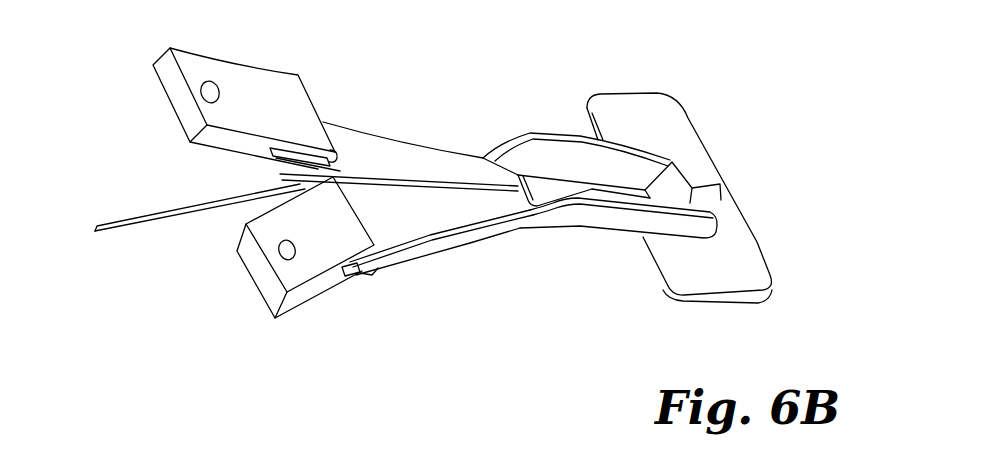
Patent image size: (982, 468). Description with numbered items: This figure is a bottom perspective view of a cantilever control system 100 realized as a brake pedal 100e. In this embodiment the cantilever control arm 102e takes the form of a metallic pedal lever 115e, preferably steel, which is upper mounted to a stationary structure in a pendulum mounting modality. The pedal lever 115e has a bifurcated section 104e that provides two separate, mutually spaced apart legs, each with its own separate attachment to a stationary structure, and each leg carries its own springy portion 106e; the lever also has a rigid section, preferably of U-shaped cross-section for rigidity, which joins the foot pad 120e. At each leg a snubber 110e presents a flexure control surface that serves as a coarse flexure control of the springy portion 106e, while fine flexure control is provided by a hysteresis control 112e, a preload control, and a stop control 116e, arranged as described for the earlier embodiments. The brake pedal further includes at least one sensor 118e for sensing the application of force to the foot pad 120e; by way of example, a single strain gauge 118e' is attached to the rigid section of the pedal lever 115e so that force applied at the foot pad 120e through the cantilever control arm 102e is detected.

The cantilever control system 100 is at (468, 185).
The brake pedal 100e is at (468, 185).
The cantilever control arm 102e is at (496, 114).
The pedal lever 115e is at (437, 139).
The bifurcated section 104e is at (344, 177).
The springy portion 106e is at (302, 174).
The snubber 110e is at (292, 163).
The hysteresis control 112e is at (324, 151).
The stop control 116e is at (695, 184).
The sensor 118e is at (618, 238).
The strain gauge 118e' is at (579, 150).
The foot pad 120e is at (758, 247).